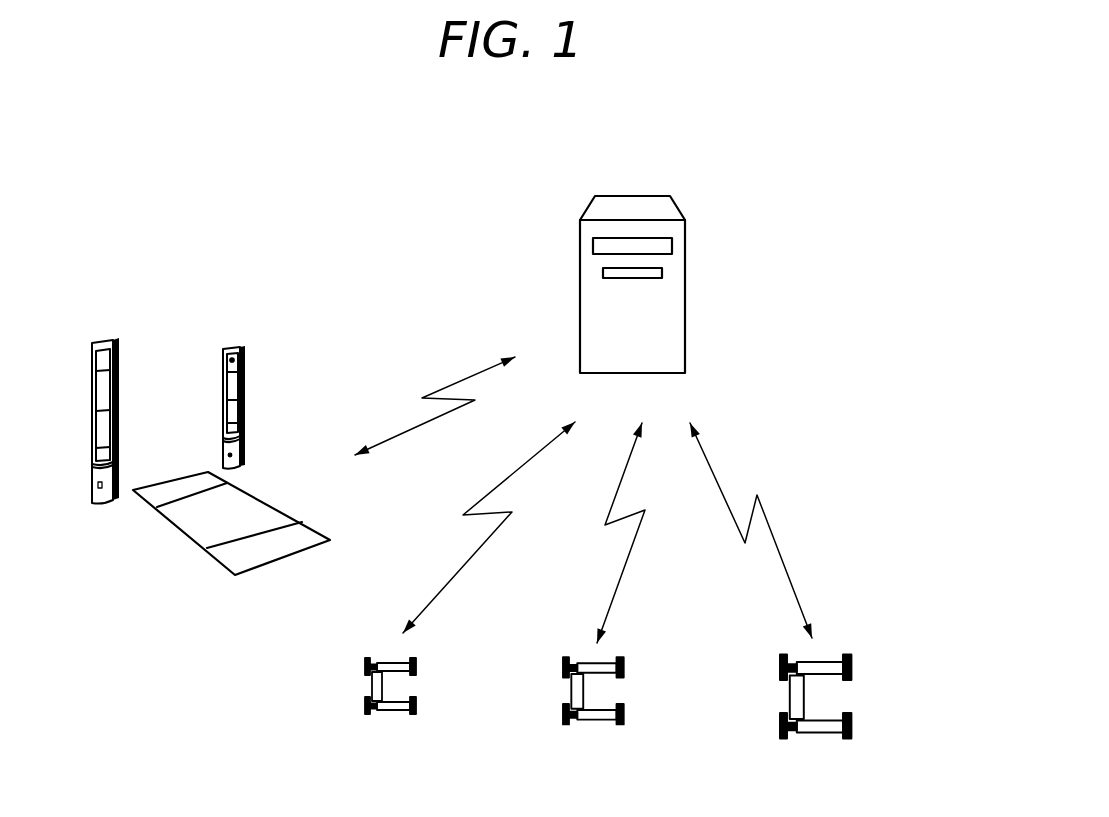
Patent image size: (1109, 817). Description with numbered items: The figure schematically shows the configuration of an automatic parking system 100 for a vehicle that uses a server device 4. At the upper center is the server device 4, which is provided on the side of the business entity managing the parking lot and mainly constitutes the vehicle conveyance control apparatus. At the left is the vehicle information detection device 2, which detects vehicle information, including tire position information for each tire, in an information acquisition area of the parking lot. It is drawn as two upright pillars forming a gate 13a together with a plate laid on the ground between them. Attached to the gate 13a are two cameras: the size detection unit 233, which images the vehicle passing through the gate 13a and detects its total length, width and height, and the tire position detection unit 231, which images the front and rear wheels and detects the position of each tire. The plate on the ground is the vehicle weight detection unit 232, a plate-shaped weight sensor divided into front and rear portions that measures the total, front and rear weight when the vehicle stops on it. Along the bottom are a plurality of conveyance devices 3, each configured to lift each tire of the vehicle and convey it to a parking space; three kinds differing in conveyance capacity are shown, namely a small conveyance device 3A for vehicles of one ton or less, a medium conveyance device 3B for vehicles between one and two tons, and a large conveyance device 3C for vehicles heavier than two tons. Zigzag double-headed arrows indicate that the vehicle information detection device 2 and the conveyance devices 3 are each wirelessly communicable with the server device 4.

The automatic parking system 100 is at (830, 164).
The server device 4 is at (714, 222).
The vehicle information detection device 2 is at (291, 348).
The gate 13a is at (92, 357).
The size detection unit 233 is at (227, 352).
The tire position detection unit 231 is at (227, 455).
The vehicle weight detection unit 232 is at (233, 553).
The conveyance device 3 is at (671, 675).
The small conveyance device 3A is at (424, 652).
The medium conveyance device 3B is at (644, 653).
The large conveyance device 3C is at (887, 655).